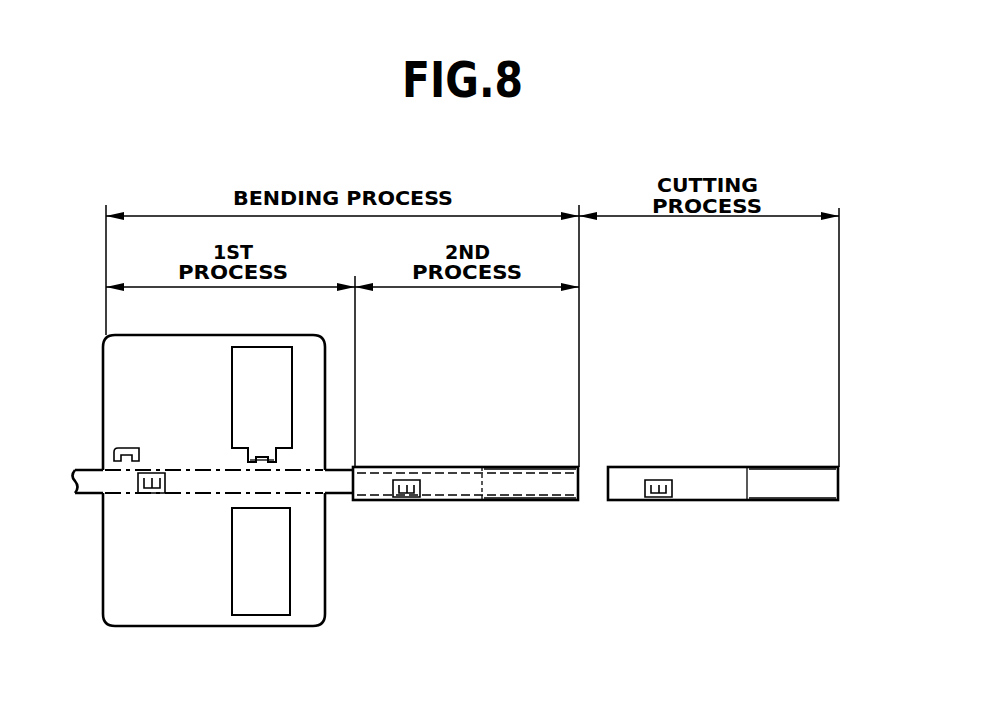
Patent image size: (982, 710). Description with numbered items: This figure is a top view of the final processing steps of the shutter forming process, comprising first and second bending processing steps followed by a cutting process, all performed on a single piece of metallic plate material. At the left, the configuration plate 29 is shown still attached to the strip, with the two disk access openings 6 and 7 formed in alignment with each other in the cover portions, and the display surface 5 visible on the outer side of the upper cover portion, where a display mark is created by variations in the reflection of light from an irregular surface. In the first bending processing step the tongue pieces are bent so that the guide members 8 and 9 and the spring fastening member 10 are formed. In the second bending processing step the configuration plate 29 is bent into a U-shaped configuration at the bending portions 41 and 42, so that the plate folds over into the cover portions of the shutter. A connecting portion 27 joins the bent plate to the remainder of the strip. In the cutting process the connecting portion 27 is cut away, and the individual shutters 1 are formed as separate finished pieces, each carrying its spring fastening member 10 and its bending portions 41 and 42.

The shutter 1 is at (708, 446).
The display surface 5 is at (178, 591).
The disk access opening 6 is at (233, 536).
The disk access opening 7 is at (237, 371).
The guide member 8 is at (113, 447).
The guide member 9 is at (261, 459).
The spring fastening member 10 is at (148, 494).
The connecting portion 27 is at (340, 497).
The configuration plate 29 is at (468, 454).
The bending portion 41 is at (187, 467).
The bending portion 42 is at (188, 494).